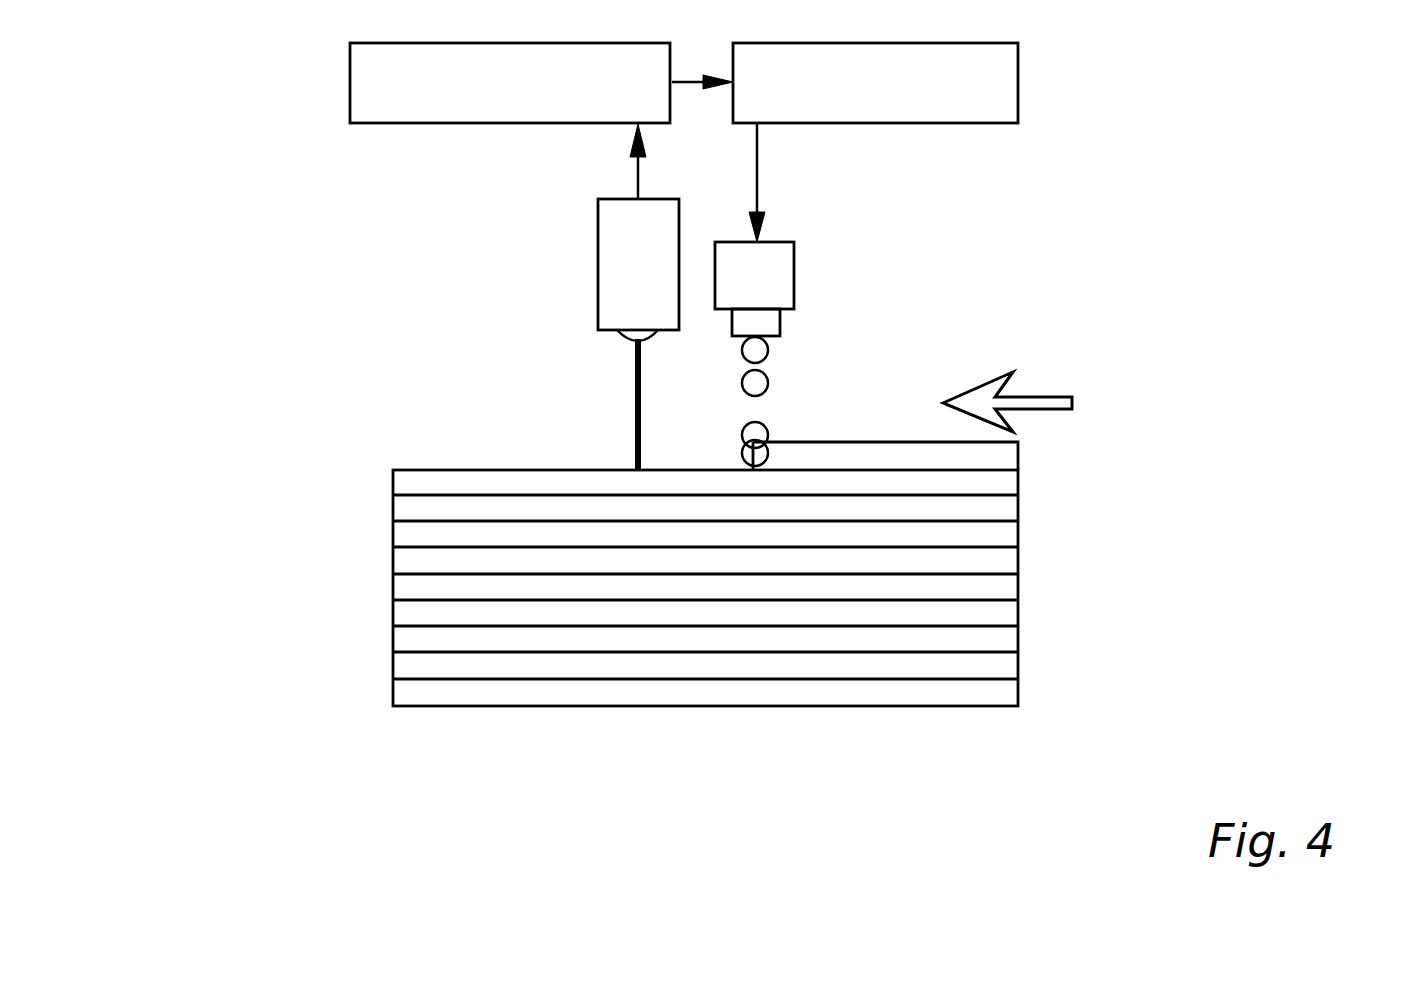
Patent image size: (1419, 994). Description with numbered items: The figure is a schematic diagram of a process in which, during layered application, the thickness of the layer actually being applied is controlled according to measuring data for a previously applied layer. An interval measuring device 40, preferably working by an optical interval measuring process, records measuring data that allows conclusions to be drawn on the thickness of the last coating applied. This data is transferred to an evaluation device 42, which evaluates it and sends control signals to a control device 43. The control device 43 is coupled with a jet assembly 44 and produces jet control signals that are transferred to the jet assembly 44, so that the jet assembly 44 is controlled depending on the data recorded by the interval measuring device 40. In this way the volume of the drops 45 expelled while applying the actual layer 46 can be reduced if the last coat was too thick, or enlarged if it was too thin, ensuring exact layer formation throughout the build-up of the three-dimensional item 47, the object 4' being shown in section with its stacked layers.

The interval measuring device 40 is at (610, 278).
The evaluation device 42 is at (367, 80).
The control device 43 is at (997, 92).
The jet assembly 44 is at (785, 277).
The drops 45 is at (757, 383).
The actual layer 46 is at (998, 458).
The object 4' is at (762, 588).
The three-dimensional item 47 is at (1007, 562).